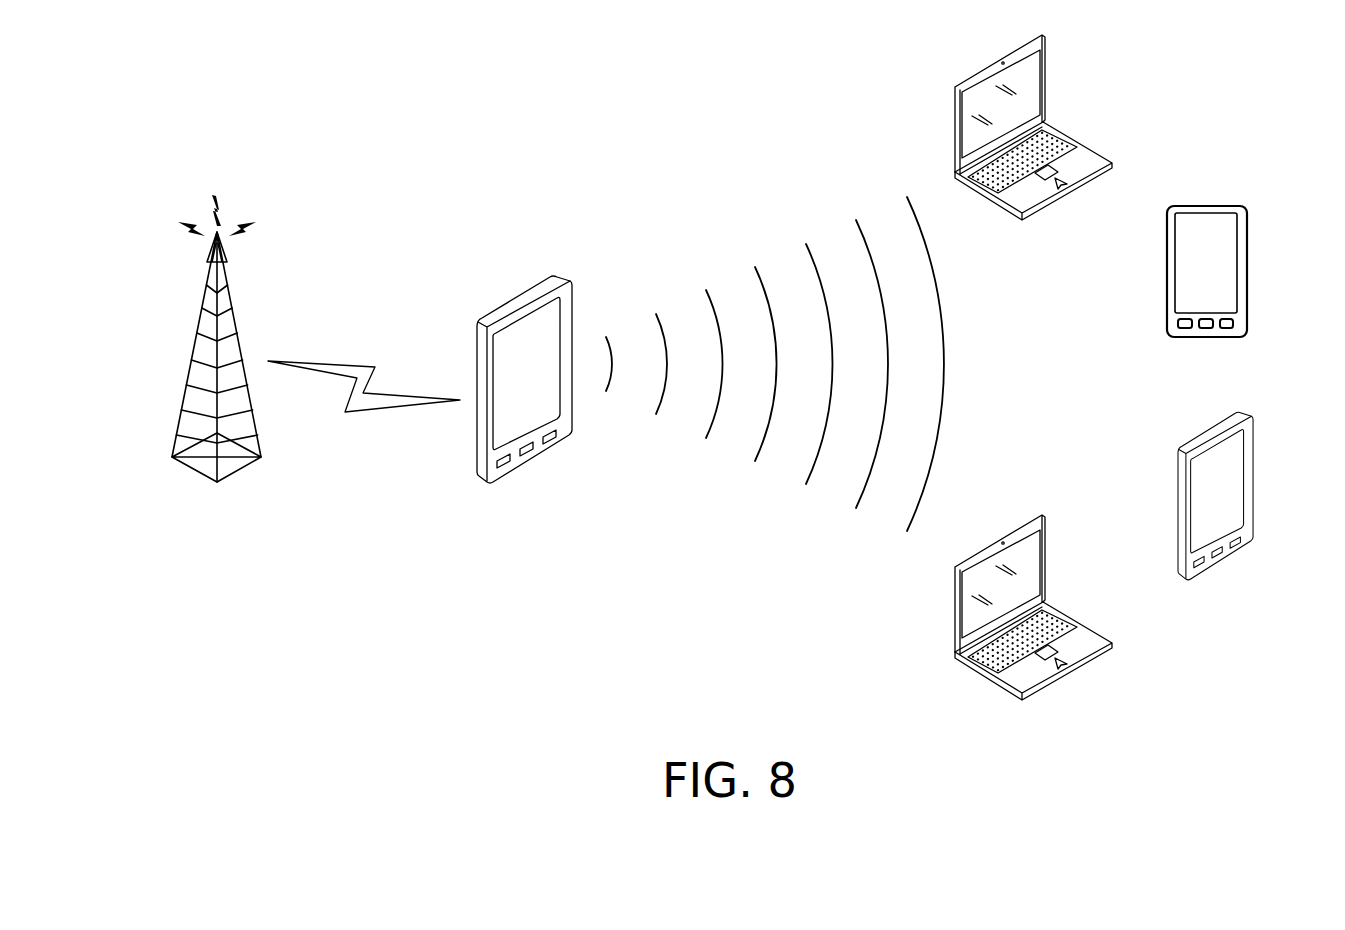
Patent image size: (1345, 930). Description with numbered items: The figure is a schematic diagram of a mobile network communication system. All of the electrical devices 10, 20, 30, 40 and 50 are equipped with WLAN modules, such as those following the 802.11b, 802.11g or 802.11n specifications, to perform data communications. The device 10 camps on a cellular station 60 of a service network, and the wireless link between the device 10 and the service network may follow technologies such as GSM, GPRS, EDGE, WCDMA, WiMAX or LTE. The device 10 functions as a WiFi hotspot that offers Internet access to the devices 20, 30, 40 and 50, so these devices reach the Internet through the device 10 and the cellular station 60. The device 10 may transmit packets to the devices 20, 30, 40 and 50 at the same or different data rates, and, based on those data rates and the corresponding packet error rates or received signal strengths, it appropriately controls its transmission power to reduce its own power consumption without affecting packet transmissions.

The device 10 is at (518, 293).
The device 20 is at (1046, 77).
The device 30 is at (1248, 268).
The device 40 is at (1254, 477).
The device 50 is at (1046, 557).
The cellular station 60 is at (192, 351).